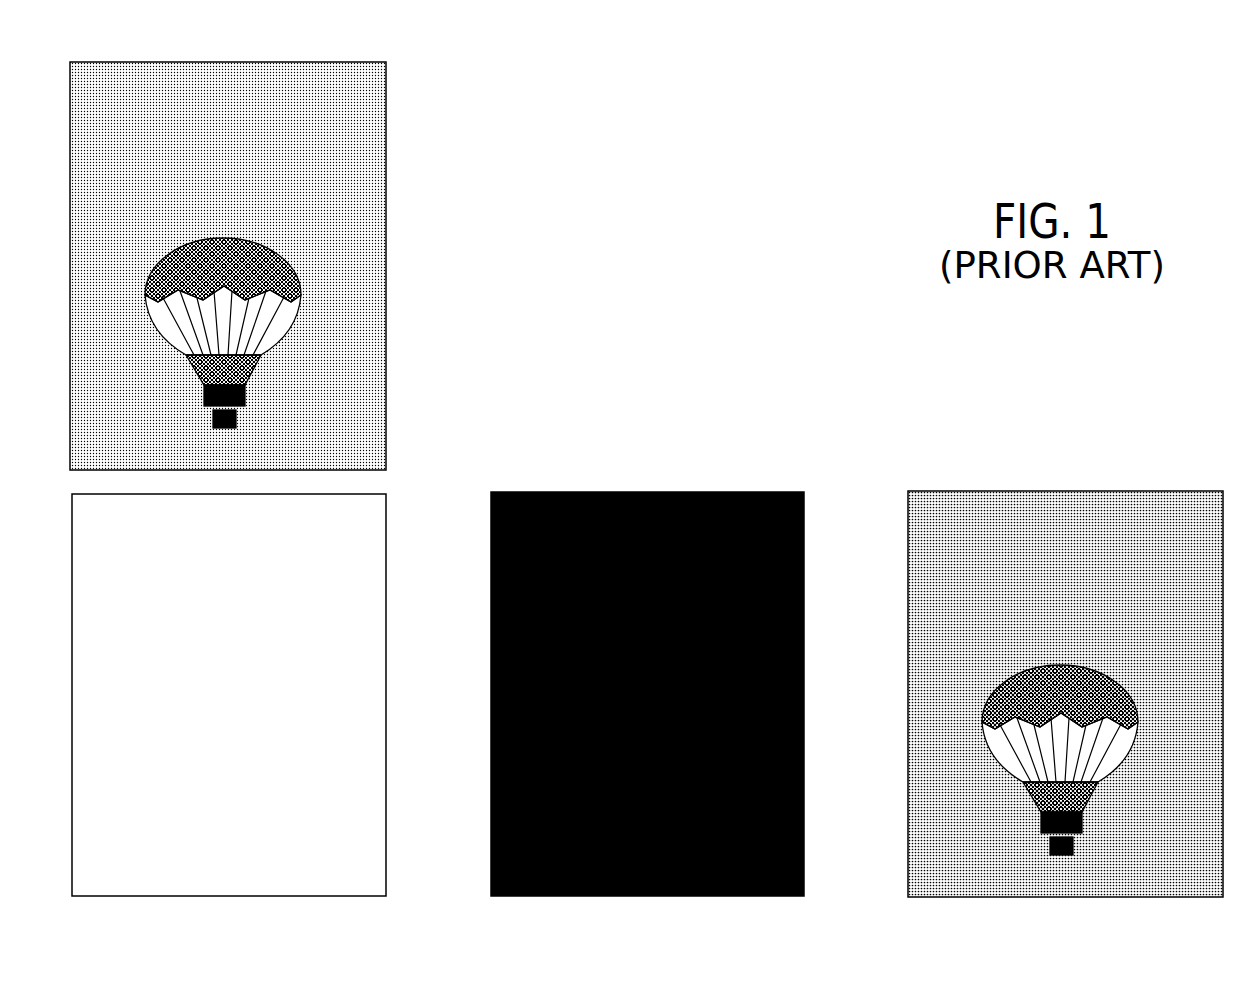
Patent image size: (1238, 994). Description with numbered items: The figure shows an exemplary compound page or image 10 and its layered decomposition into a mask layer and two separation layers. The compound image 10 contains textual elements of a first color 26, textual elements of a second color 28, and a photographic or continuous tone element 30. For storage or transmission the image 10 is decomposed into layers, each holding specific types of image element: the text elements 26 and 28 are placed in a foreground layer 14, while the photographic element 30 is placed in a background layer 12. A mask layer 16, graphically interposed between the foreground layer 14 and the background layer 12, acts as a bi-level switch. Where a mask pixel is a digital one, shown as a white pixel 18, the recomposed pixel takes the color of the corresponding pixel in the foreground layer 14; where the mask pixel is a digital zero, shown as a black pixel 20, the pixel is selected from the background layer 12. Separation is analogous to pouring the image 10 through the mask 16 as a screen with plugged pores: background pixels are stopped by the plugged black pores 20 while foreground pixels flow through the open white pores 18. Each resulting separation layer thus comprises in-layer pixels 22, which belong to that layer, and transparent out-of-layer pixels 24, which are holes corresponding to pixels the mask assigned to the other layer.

The compound image 10 is at (398, 137).
The background layer 12 is at (997, 474).
The foreground layer 14 is at (399, 484).
The mask layer 16 is at (676, 658).
The white pixel 18 is at (762, 527).
The black pixel 20 is at (573, 483).
The in-layer pixels 22 is at (297, 619).
The out-of-layer pixels 24 is at (313, 857).
The textual elements of a first color 26 is at (343, 95).
The textual elements of a second color 28 is at (320, 352).
The photographic element 30 is at (284, 262).